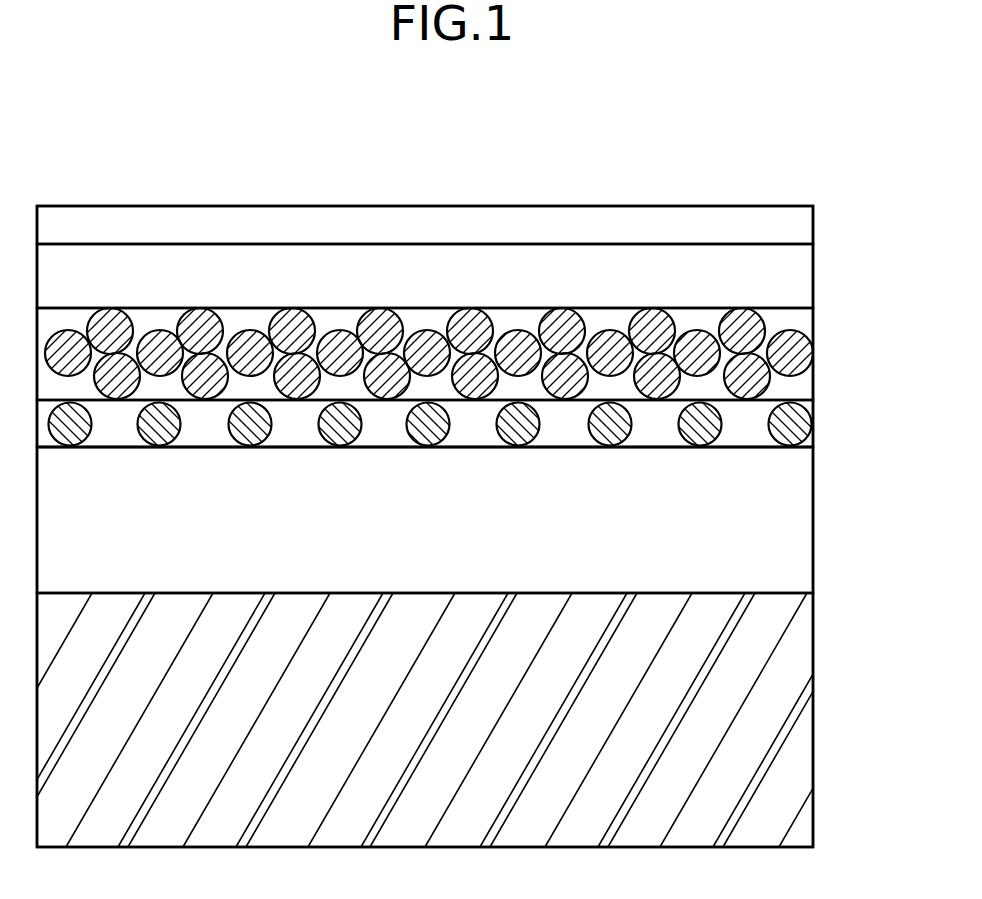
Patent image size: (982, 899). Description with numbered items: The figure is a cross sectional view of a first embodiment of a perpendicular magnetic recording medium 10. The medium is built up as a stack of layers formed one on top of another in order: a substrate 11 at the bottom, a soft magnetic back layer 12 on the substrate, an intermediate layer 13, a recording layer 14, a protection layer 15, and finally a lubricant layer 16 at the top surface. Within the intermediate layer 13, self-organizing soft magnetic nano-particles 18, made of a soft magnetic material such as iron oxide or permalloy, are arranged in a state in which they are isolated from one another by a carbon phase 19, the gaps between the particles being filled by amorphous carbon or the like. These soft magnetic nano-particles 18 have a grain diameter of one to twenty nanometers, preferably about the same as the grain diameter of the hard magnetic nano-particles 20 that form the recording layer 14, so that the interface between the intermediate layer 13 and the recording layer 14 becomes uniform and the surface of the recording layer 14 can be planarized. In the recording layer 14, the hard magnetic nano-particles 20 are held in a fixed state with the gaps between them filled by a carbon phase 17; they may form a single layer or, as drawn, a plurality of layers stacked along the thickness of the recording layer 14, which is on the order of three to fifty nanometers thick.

The perpendicular magnetic recording medium 10 is at (35, 151).
The substrate 11 is at (813, 718).
The soft magnetic back layer 12 is at (813, 517).
The intermediate layer 13 is at (813, 425).
The recording layer 14 is at (813, 380).
The protection layer 15 is at (813, 272).
The lubricant layer 16 is at (813, 228).
The carbon phase 17 is at (417, 322).
The soft magnetic nano-particles 18 is at (680, 447).
The carbon phase 19 is at (730, 447).
The hard magnetic nano-particles 20 is at (637, 320).